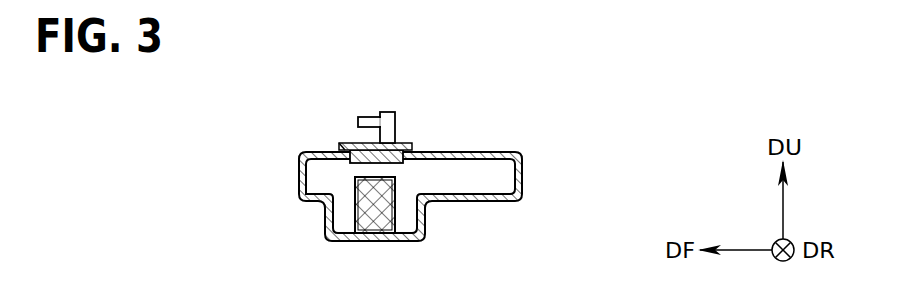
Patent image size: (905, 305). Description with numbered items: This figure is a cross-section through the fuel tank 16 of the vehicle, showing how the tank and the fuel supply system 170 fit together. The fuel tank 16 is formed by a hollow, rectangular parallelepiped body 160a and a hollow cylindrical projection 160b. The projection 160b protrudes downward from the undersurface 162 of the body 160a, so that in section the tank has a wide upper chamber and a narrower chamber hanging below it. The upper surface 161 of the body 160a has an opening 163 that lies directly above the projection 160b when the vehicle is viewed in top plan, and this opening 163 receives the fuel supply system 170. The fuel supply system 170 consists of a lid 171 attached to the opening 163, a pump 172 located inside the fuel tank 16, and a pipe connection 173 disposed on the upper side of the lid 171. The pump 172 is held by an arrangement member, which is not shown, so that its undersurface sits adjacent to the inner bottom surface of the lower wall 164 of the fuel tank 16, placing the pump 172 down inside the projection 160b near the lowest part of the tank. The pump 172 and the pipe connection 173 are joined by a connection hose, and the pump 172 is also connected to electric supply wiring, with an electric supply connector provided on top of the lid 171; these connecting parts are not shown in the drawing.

The fuel tank 16 is at (449, 159).
The body 160a is at (288, 152).
The projection 160b is at (288, 198).
The upper surface 161 is at (505, 152).
The undersurface 162 is at (503, 203).
The opening 163 is at (350, 144).
The lower wall 164 is at (397, 216).
The fuel supply system 170 is at (439, 133).
The lid 171 is at (412, 147).
The pump 172 is at (397, 189).
The pipe connection 173 is at (395, 117).